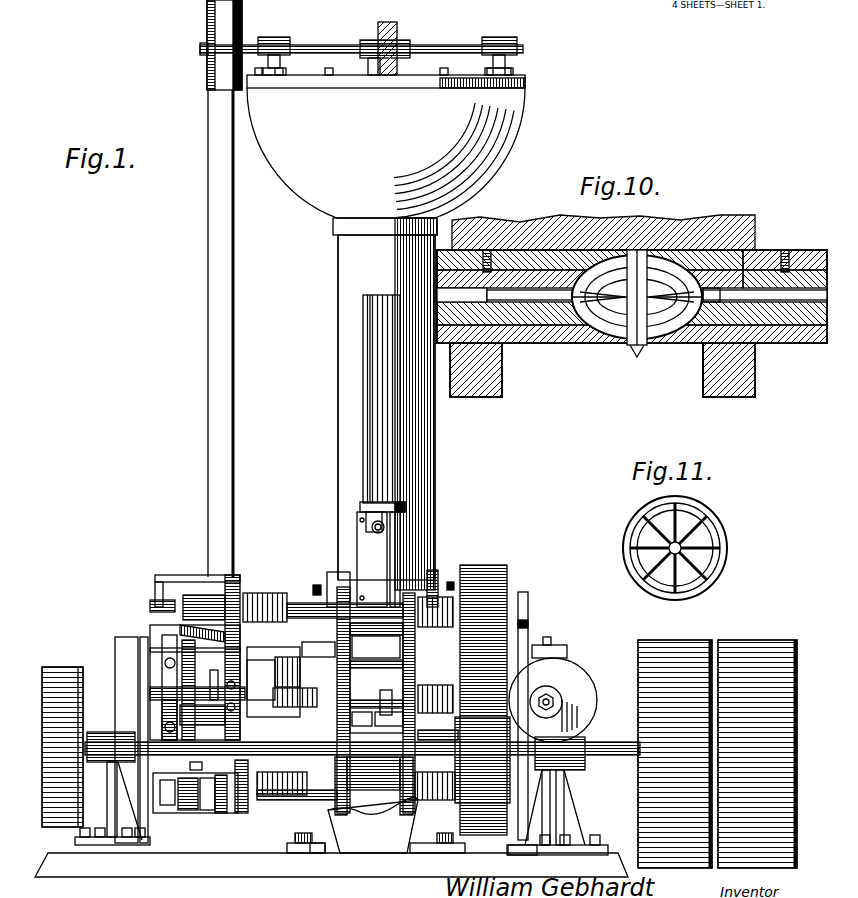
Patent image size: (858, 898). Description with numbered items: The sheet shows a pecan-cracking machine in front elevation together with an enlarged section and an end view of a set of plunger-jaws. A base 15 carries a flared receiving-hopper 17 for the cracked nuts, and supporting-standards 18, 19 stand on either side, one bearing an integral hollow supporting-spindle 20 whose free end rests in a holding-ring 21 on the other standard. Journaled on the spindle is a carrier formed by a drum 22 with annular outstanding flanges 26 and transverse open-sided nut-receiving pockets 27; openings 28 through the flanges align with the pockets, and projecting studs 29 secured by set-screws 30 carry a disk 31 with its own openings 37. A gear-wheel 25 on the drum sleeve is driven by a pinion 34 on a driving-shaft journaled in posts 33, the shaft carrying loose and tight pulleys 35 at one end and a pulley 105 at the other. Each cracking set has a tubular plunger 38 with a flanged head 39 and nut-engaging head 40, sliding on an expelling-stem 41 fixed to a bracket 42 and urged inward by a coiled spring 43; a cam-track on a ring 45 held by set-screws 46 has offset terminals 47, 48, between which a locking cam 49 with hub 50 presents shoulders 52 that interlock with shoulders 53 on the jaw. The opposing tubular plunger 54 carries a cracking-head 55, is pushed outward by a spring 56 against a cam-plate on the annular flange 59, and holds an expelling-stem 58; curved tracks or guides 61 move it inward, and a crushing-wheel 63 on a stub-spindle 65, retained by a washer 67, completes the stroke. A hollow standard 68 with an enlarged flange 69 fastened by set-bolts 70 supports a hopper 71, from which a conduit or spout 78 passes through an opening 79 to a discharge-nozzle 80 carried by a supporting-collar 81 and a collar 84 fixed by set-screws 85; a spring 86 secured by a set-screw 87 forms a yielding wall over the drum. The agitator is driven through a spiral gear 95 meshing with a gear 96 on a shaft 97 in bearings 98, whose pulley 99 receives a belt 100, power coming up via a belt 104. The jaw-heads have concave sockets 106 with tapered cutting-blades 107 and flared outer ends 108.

In FIG. 1, the base 15 is at (305, 873).
In FIG. 1, the receiving-hopper 17 is at (373, 825).
In FIG. 1, the supporting-standard 18 is at (510, 846).
In FIG. 1, the supporting-standard 19 is at (142, 839).
In FIG. 1, the supporting-spindle 20 is at (438, 730).
In FIG. 1, the holding-ring 21 is at (118, 645).
In FIG. 10, the drum 22 is at (565, 224).
In FIG. 1, the gear-wheel 25 is at (480, 570).
In FIG. 1, the annular outstanding flanges 26 is at (333, 580).
In FIG. 10, the annular outstanding flanges 26 is at (475, 398).
In FIG. 1, the nut-receiving pockets 27 is at (380, 798).
In FIG. 10, the openings 28 is at (502, 370).
In FIG. 1, the projecting studs 29 is at (296, 817).
In FIG. 1, the set-screws 30 is at (218, 810).
In FIG. 1, the disk 31 is at (240, 585).
In FIG. 1, the posts 33 is at (108, 768).
In FIG. 1, the pinion 34 is at (510, 737).
In FIG. 1, the loose and tight pulleys 35 is at (712, 640).
In FIG. 1, the openings 37 is at (612, 744).
In FIG. 1, the tubular plunger 38 is at (268, 815).
In FIG. 10, the tubular plunger 38 is at (487, 250).
In FIG. 1, the flanged head 39 is at (180, 620).
In FIG. 1, the nut-engaging head 40 is at (386, 696).
In FIG. 10, the nut-engaging head 40 is at (545, 344).
In FIG. 10, the expelling-stem 41 is at (504, 294).
In FIG. 1, the bracket 42 is at (175, 590).
In FIG. 1, the coiled spring 43 is at (187, 794).
In FIG. 1, the ring 45 is at (165, 652).
In FIG. 1, the set-screws 46 is at (162, 665).
In FIG. 1, the offset terminal 47 is at (205, 642).
In FIG. 1, the offset terminal 48 is at (200, 766).
In FIG. 1, the locking cam 49 is at (296, 675).
In FIG. 1, the hub 50 is at (261, 680).
In FIG. 1, the ribs or shoulders 52 is at (300, 690).
In FIG. 1, the shoulders 53 is at (270, 593).
In FIG. 1, the tubular plunger 54 is at (389, 721).
In FIG. 10, the tubular plunger 54 is at (790, 344).
In FIG. 10, the cracking-head 55 is at (676, 340).
In FIG. 11, the cracking-head 55 is at (735, 558).
In FIG. 1, the spring 56 is at (432, 627).
In FIG. 10, the expelling-stem 58 is at (765, 296).
In FIG. 1, the annular flange 59 is at (529, 605).
In FIG. 1, the tracks or guides 61 is at (530, 625).
In FIG. 1, the crushing-wheel 63 is at (340, 690).
In FIG. 1, the stub-spindle 65 is at (548, 694).
In FIG. 1, the washer 67 is at (560, 699).
In FIG. 1, the hollow standard 68 is at (337, 305).
In FIG. 1, the enlarged flange 69 is at (325, 852).
In FIG. 1, the set-bolts 70 is at (293, 838).
In FIG. 1, the hopper 71 is at (386, 151).
In FIG. 1, the conduit or spout 78 is at (372, 402).
In FIG. 1, the opening 79 is at (410, 452).
In FIG. 1, the discharge-nozzle 80 is at (357, 556).
In FIG. 1, the supporting-collar 81 is at (358, 505).
In FIG. 1, the collar 84 is at (433, 578).
In FIG. 1, the set-screws 85 is at (375, 589).
In FIG. 1, the spring 86 is at (398, 547).
In FIG. 1, the set-screw 87 is at (368, 527).
In FIG. 1, the spiral gear 95 is at (366, 38).
In FIG. 1, the spiral gear 96 is at (390, 23).
In FIG. 1, the shaft 97 is at (470, 46).
In FIG. 1, the bearings 98 is at (282, 34).
In FIG. 1, the pulley 99 is at (243, 16).
In FIG. 1, the belt 100 is at (208, 308).
In FIG. 1, the belt 104 is at (60, 672).
In FIG. 1, the pulley 105 is at (92, 732).
In FIG. 10, the sockets 106 is at (637, 304).
In FIG. 11, the sockets 106 is at (706, 545).
In FIG. 10, the cutting-blades 107 is at (600, 352).
In FIG. 11, the cutting-blades 107 is at (631, 540).
In FIG. 10, the flared outer ends 108 is at (637, 352).
In FIG. 11, the flared outer ends 108 is at (715, 526).